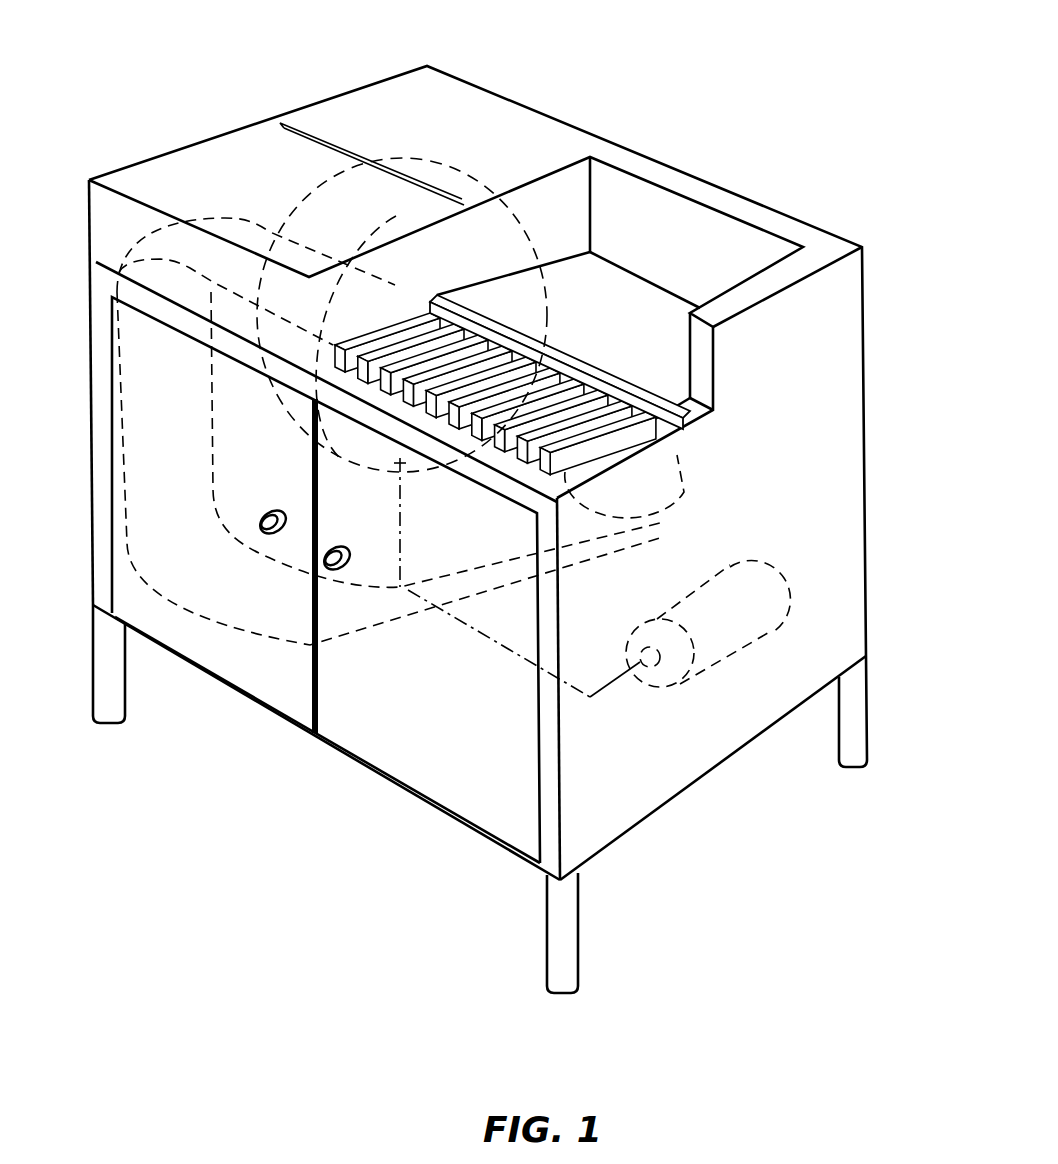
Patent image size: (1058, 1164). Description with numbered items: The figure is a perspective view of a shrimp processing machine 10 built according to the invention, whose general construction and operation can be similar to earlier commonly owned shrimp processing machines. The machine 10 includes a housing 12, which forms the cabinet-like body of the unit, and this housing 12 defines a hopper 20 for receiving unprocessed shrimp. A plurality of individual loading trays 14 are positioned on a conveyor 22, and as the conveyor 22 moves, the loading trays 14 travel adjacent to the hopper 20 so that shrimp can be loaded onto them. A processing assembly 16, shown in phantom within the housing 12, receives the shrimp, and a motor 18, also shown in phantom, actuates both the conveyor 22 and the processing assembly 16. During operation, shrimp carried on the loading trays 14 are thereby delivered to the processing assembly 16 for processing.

The shrimp processing machine 10 is at (670, 80).
The housing 12 is at (620, 782).
The individual loading trays 14 is at (607, 436).
The processing assembly 16 is at (470, 240).
The motor 18 is at (740, 578).
The hopper 20 is at (648, 312).
The conveyor 22 is at (130, 547).